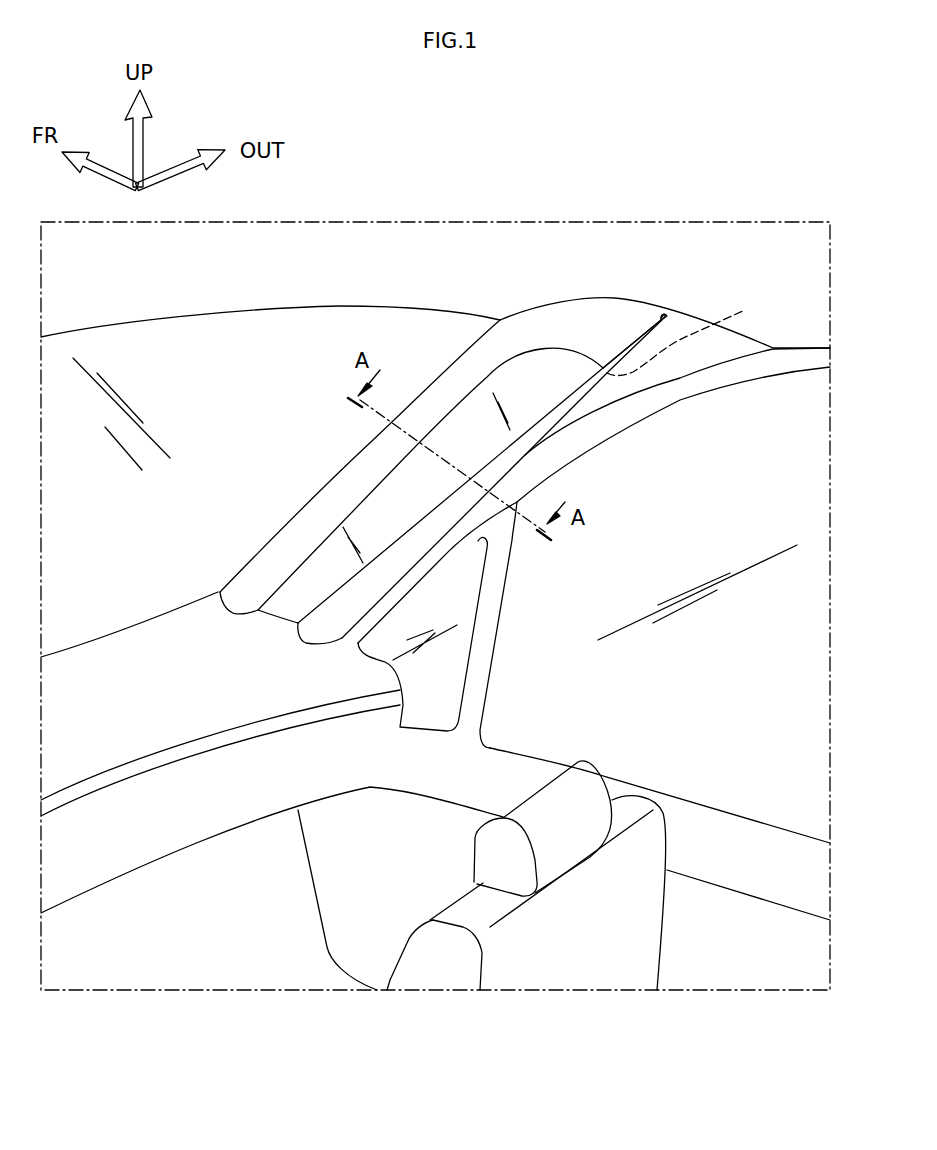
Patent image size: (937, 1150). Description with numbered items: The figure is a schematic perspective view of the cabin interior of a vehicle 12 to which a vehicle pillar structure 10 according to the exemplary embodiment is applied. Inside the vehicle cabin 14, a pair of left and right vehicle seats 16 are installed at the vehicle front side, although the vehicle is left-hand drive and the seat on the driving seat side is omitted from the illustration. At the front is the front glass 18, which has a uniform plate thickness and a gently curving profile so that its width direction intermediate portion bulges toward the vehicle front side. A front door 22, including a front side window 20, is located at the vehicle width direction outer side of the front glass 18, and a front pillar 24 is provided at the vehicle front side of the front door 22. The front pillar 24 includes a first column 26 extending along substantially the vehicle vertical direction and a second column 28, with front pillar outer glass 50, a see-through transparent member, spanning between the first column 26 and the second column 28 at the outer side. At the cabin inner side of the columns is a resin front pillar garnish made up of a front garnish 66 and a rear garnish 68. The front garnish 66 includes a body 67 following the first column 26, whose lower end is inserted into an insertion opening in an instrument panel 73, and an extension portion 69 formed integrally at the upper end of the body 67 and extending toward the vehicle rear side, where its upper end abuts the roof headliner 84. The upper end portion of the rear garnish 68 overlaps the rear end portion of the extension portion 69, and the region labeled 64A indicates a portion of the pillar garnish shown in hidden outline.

The vehicle 12 is at (478, 197).
The vehicle pillar structure 10 is at (300, 381).
The roof headliner 84 is at (552, 256).
The first column 26 is at (421, 401).
The front pillar 24 is at (324, 482).
The front garnish 66 is at (291, 520).
The body 67 is at (270, 533).
The front pillar outer glass 50 is at (425, 470).
The extension portion 69 is at (613, 325).
The hidden garnish portion 64A is at (701, 336).
The rear garnish 68 is at (592, 431).
The second column 28 is at (566, 456).
The front glass 18 is at (100, 557).
The instrument panel 73 is at (113, 720).
The front side window 20 is at (717, 650).
The vehicle cabin 14 is at (354, 856).
The front door 22 is at (460, 835).
The vehicle seat 16 is at (637, 935).